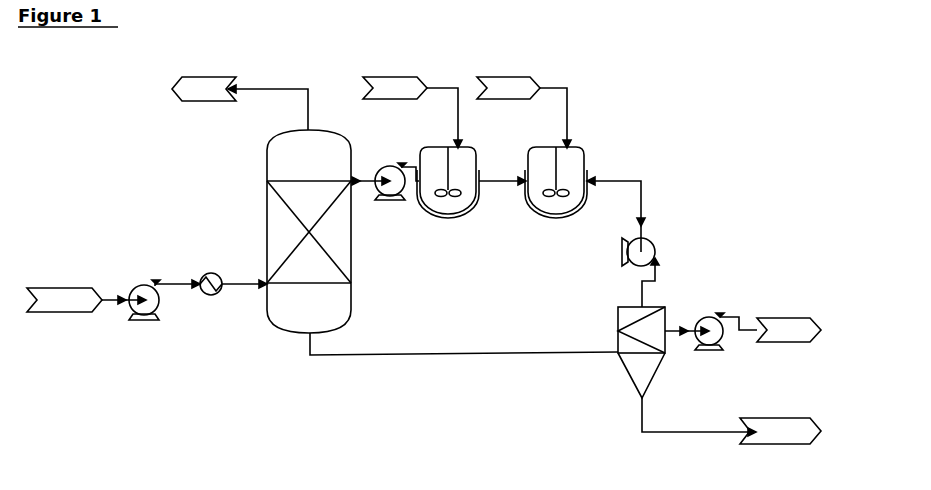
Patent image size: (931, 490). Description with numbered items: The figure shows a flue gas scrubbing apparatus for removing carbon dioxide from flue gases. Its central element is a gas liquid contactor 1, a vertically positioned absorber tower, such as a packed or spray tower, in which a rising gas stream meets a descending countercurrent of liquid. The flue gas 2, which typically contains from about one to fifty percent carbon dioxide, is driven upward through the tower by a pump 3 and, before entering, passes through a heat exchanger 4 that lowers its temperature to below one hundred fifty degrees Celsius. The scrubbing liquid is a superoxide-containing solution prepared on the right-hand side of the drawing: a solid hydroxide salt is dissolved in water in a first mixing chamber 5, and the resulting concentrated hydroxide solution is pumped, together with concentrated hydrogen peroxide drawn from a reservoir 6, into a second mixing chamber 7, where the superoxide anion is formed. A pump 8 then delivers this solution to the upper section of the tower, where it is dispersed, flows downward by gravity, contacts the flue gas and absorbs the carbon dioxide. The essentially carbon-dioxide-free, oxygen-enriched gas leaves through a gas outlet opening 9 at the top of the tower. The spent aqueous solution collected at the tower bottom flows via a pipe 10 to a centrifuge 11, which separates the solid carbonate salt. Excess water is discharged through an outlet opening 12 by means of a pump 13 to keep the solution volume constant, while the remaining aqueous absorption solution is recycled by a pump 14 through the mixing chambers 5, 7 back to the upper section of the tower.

The gas liquid contactor 1 is at (295, 231).
The flue gas 2 is at (86, 282).
The pump 3 is at (162, 285).
The heat exchanger 4 is at (233, 268).
The first mixing chamber 5 is at (585, 199).
The reservoir 6 is at (412, 112).
The second mixing chamber 7 is at (471, 197).
The pump 8 is at (385, 170).
The gas outlet opening 9 is at (240, 112).
The pipe 10 is at (464, 357).
The centrifuge 11 is at (624, 352).
The outlet opening 12 is at (789, 343).
The pump 13 is at (711, 353).
The pump 14 is at (657, 272).